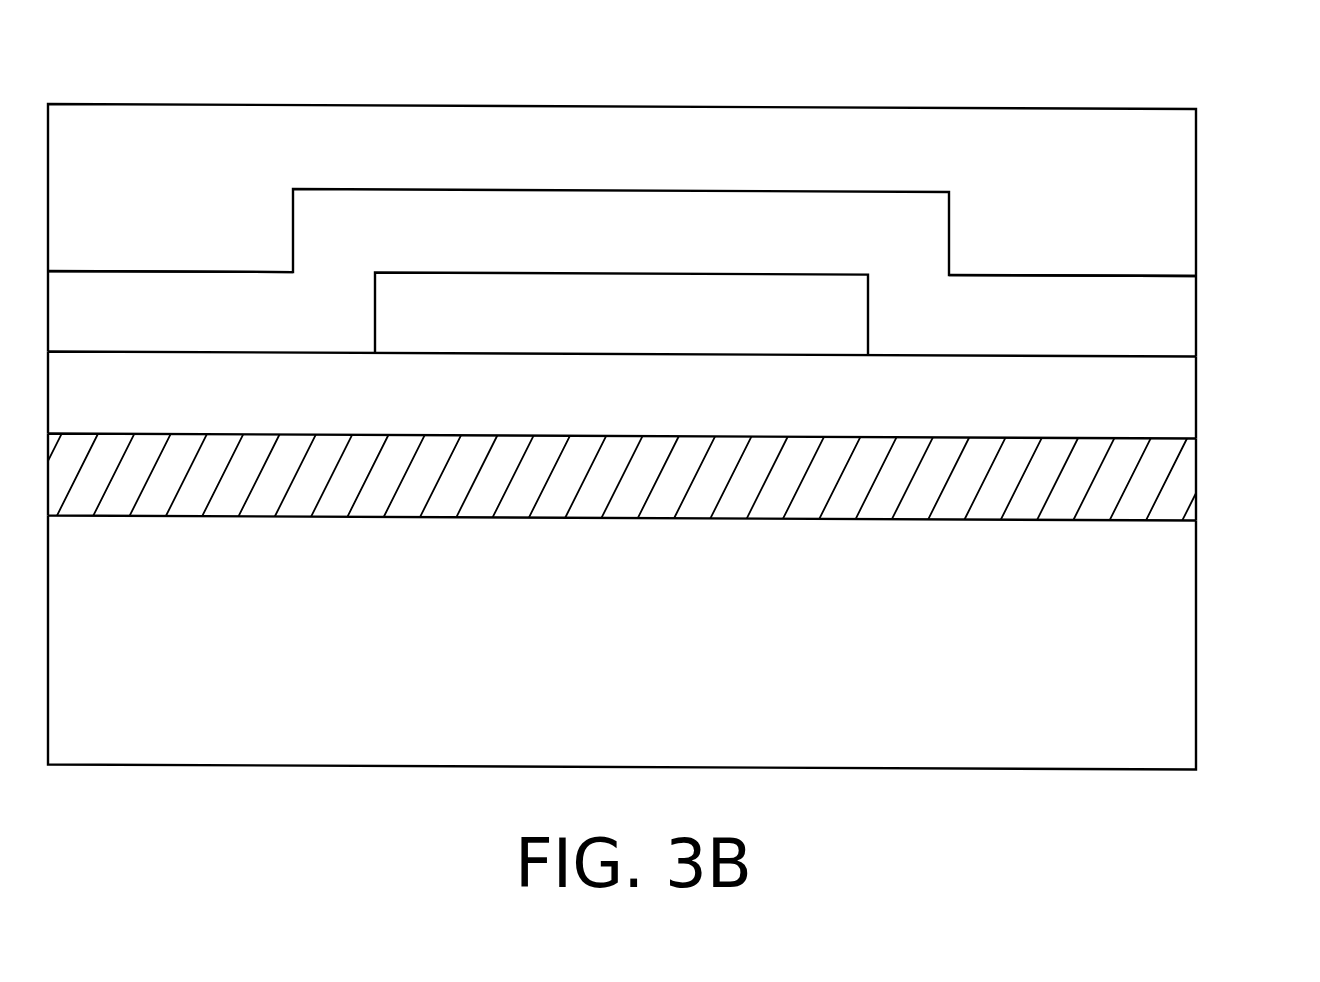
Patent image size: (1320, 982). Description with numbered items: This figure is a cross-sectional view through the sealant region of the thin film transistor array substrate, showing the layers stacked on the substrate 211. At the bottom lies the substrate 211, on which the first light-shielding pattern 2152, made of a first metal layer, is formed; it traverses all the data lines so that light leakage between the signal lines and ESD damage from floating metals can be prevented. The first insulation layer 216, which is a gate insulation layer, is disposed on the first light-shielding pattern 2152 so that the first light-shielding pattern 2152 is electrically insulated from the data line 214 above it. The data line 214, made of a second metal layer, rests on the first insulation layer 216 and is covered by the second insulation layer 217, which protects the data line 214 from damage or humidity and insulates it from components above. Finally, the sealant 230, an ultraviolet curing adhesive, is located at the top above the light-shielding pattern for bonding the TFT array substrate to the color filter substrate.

The substrate 211 is at (1183, 625).
The first light-shielding pattern 2152 is at (1183, 500).
The first insulation layer 216 is at (1183, 407).
The second insulation layer 217 is at (1183, 320).
The data line 214 is at (632, 287).
The sealant 230 is at (1183, 218).